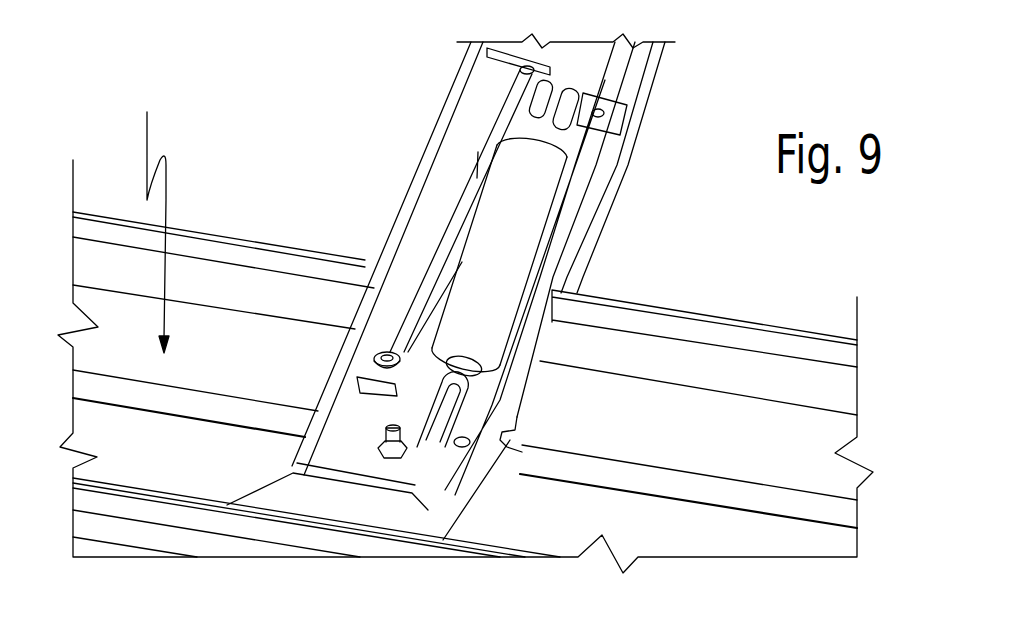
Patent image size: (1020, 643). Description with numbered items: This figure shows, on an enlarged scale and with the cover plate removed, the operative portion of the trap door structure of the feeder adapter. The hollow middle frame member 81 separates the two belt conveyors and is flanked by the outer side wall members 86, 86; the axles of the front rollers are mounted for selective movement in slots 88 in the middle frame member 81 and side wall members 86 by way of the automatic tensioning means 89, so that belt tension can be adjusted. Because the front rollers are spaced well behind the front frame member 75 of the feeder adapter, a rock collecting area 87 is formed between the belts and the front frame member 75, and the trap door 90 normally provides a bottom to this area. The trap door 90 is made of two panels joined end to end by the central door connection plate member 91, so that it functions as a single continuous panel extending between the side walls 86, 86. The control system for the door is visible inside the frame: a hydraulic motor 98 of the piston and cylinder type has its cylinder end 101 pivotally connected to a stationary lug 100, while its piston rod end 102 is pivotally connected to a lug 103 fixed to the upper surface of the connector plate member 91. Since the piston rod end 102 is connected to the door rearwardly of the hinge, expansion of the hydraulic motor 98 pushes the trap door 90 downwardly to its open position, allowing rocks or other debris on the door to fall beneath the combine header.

The front frame member 75 is at (133, 530).
The middle frame member 81 is at (452, 93).
The outer side wall member 86 is at (406, 198).
The rock collecting area 87 is at (153, 215).
The slot 88 is at (388, 283).
The automatic tensioning means 89 is at (477, 152).
The trap door 90 is at (613, 490).
The central door connection plate member 91 is at (315, 498).
The hydraulic motor 98 is at (565, 200).
The stationary lug 100 is at (580, 61).
The cylinder end 101 is at (570, 126).
The piston rod end 102 is at (467, 417).
The lug 103 is at (437, 458).